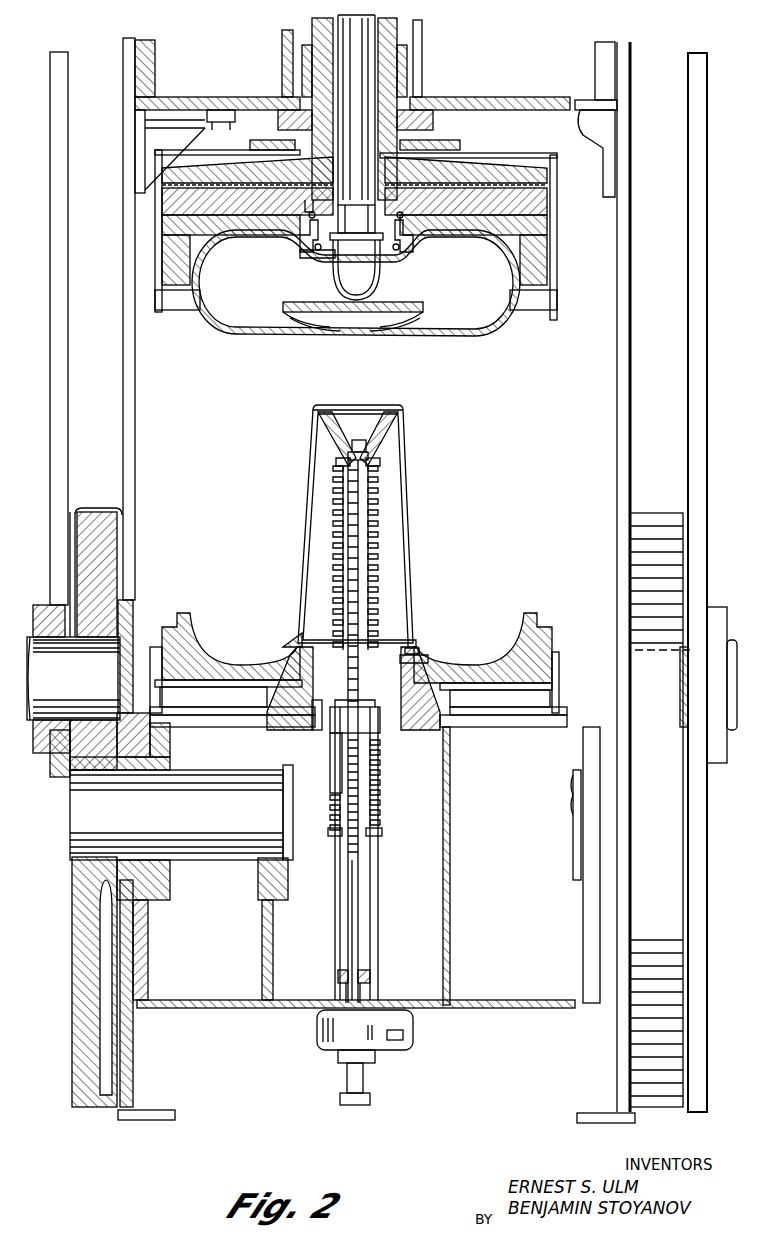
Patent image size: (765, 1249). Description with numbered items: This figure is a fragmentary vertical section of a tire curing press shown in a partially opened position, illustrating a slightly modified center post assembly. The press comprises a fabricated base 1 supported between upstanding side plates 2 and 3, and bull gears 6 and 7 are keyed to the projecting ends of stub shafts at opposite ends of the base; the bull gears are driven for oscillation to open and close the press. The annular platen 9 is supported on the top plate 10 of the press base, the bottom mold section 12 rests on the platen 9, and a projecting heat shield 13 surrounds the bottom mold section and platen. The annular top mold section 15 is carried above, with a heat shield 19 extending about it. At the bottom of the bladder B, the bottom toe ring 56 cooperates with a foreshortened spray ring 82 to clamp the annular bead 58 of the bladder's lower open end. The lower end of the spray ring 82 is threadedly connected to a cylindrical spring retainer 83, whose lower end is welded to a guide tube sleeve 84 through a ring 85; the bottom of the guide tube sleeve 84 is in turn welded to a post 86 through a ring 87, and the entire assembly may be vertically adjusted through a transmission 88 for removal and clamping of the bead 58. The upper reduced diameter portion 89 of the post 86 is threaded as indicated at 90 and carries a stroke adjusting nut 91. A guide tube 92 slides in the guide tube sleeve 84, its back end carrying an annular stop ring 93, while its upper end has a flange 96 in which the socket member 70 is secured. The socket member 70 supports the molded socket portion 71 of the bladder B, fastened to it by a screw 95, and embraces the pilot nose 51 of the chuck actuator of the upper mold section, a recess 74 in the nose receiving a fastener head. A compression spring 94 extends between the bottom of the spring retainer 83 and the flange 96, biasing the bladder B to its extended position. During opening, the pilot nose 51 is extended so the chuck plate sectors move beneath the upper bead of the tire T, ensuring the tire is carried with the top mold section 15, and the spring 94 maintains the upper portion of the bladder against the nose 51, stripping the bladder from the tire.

The fabricated base 1 is at (507, 1018).
The side plate 2 is at (133, 1063).
The side plate 3 is at (616, 1057).
The bull gear 6 is at (78, 880).
The bull gear 7 is at (688, 870).
The annular platen 9 is at (525, 712).
The top plate 10 is at (480, 728).
The bottom mold section 12 is at (490, 632).
The heat shield 13 is at (559, 661).
The annular top mold section 15 is at (162, 248).
The heat shield 19 is at (557, 268).
The pilot nose 51 is at (372, 280).
The bottom toe ring 56 is at (419, 648).
The annular bead 58 is at (428, 658).
The socket member 70 is at (383, 435).
The molded socket portion 71 is at (378, 413).
The recess 74 is at (345, 285).
The spray ring 82 is at (397, 700).
The cylindrical spring retainer 83 is at (381, 805).
The guide tube sleeve 84 is at (378, 905).
The ring 85 is at (382, 835).
The post 86 is at (341, 998).
The ring 87 is at (370, 976).
The transmission 88 is at (315, 1036).
The upper reduced diameter portion 89 is at (360, 945).
The threads 90 is at (359, 856).
The stroke adjusting nut 91 is at (375, 730).
The guide tube 92 is at (375, 545).
The annular stop ring 93 is at (338, 750).
The compression spring 94 is at (378, 515).
The screw 95 is at (340, 456).
The flange 96 is at (380, 460).
The bladder B is at (405, 495).
The tire T is at (222, 337).